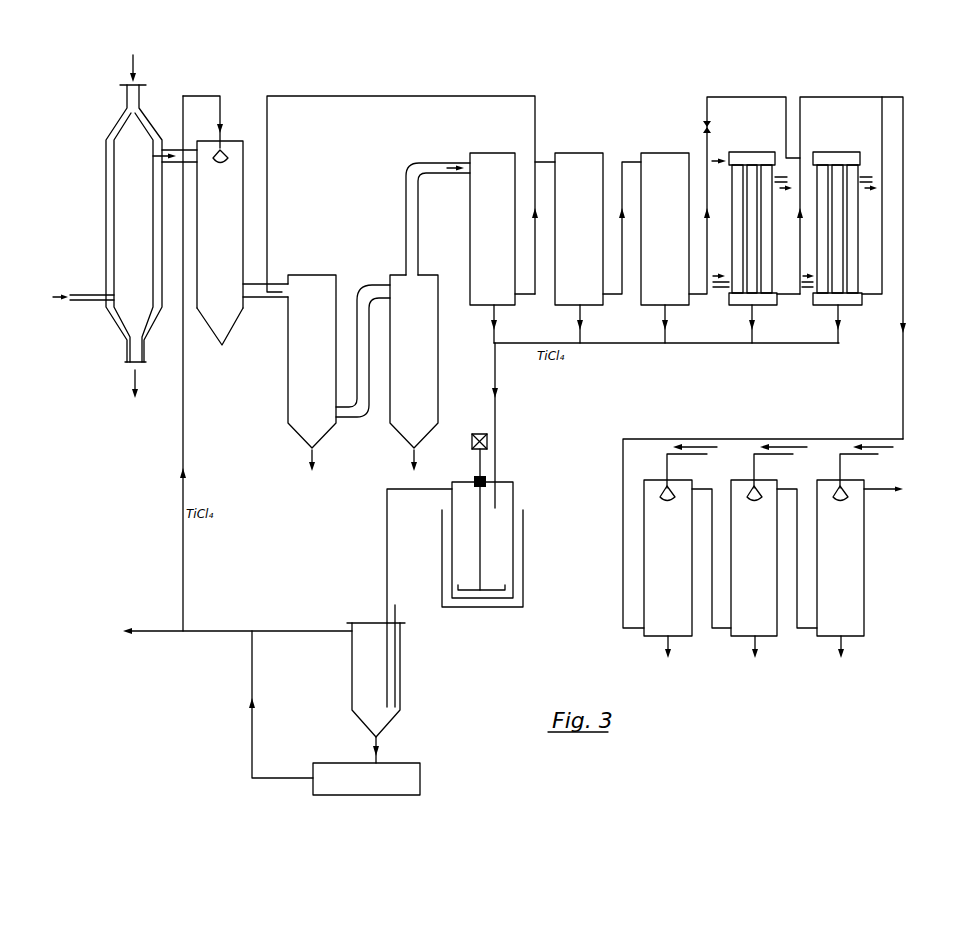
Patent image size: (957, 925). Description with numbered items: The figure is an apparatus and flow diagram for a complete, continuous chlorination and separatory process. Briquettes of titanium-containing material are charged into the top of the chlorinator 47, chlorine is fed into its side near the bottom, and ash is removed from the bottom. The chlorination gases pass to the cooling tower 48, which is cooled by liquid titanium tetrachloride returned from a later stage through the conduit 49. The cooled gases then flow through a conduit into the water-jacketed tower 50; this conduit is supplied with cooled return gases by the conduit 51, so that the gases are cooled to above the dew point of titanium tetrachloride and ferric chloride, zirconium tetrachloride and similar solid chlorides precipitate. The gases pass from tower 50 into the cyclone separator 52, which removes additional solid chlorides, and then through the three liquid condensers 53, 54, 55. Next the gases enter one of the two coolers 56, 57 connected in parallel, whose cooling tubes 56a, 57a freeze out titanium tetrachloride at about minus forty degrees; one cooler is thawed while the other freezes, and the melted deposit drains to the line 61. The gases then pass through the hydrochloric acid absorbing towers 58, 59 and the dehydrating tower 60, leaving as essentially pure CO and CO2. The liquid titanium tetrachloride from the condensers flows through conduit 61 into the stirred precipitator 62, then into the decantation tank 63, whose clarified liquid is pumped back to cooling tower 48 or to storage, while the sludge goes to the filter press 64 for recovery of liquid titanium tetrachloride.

The chlorinator 47 is at (124, 226).
The cooling tower 48 is at (242, 243).
The conduit 49 is at (208, 119).
The water-jacketed tower 50 is at (339, 373).
The conduit 51 is at (402, 195).
The cyclone separator 52 is at (396, 317).
The liquid condenser 53 is at (512, 248).
The liquid condenser 54 is at (598, 248).
The liquid condenser 55 is at (720, 220).
The cooler 56 is at (750, 233).
The cooling tubes 56a is at (766, 163).
The cooler 57 is at (838, 232).
The cooling tubes 57a is at (851, 163).
The hydrochloric acid absorbing tower 58 is at (687, 556).
The hydrochloric acid absorbing tower 59 is at (774, 556).
The dehydrating tower 60 is at (883, 556).
The conduit 61 is at (507, 425).
The precipitator 62 is at (468, 528).
The decantation tank 63 is at (367, 684).
The filter press 64 is at (255, 711).